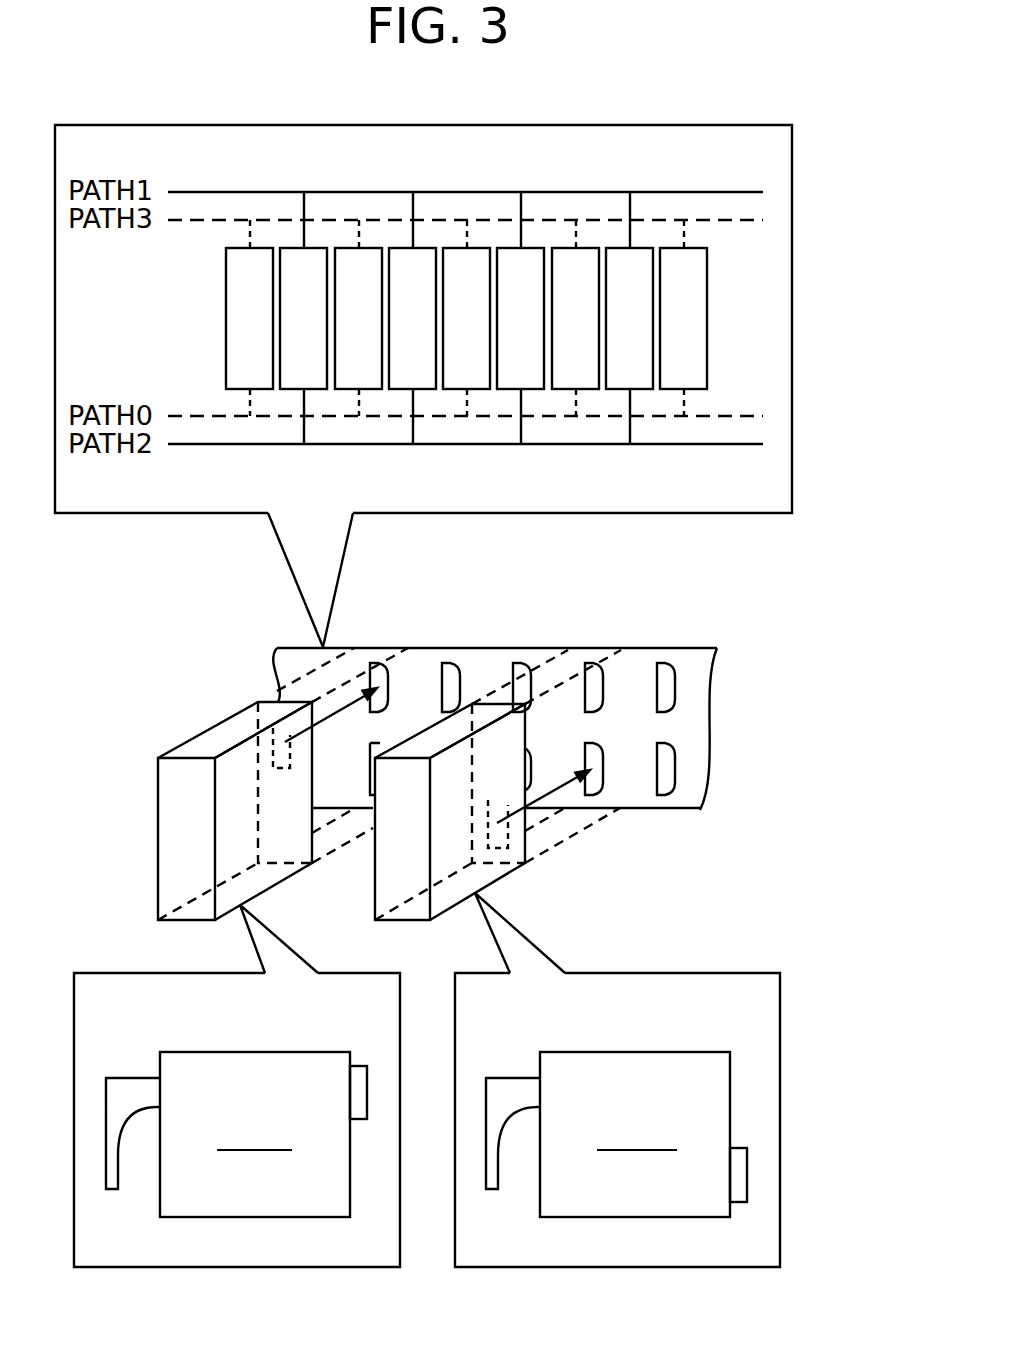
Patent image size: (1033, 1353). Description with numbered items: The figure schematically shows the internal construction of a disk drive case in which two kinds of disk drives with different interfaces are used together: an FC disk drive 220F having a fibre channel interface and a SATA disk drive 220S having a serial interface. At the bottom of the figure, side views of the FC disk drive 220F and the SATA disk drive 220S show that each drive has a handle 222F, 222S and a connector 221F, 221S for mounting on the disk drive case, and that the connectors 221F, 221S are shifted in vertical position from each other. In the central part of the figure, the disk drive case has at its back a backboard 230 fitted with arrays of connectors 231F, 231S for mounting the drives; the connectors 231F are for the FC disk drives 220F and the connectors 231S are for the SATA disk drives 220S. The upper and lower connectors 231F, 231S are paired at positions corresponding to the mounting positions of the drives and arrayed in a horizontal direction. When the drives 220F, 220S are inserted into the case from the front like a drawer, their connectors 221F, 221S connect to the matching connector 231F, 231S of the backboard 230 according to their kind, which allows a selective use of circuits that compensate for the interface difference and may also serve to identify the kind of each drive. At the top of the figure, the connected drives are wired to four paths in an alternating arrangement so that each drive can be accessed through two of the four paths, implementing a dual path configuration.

The backboard 230 is at (632, 648).
The connector for FC disk drive 231F is at (675, 688).
The connector for SATA disk drive 231S is at (675, 770).
The FC disk drive 220F is at (188, 743).
The SATA disk drive 220S is at (498, 883).
The connector of FC disk drive 221F is at (262, 745).
The connector of SATA disk drive 221S is at (523, 838).
The handle of FC disk drive 222F is at (125, 1078).
The handle of SATA disk drive 222S is at (505, 1078).